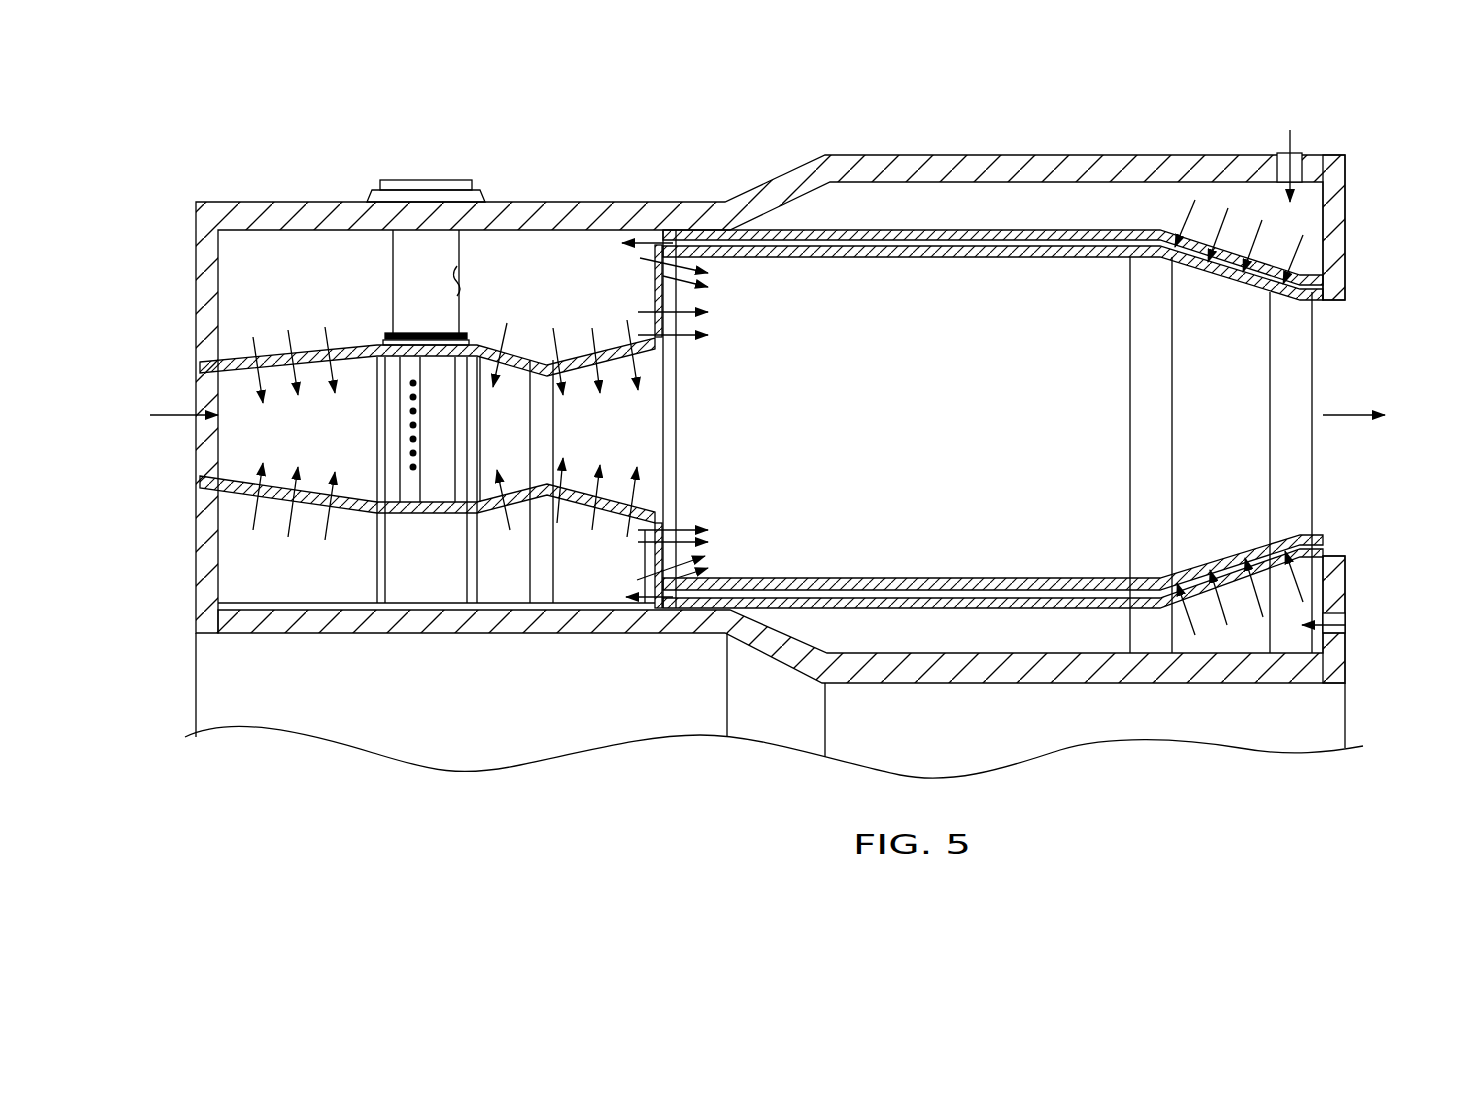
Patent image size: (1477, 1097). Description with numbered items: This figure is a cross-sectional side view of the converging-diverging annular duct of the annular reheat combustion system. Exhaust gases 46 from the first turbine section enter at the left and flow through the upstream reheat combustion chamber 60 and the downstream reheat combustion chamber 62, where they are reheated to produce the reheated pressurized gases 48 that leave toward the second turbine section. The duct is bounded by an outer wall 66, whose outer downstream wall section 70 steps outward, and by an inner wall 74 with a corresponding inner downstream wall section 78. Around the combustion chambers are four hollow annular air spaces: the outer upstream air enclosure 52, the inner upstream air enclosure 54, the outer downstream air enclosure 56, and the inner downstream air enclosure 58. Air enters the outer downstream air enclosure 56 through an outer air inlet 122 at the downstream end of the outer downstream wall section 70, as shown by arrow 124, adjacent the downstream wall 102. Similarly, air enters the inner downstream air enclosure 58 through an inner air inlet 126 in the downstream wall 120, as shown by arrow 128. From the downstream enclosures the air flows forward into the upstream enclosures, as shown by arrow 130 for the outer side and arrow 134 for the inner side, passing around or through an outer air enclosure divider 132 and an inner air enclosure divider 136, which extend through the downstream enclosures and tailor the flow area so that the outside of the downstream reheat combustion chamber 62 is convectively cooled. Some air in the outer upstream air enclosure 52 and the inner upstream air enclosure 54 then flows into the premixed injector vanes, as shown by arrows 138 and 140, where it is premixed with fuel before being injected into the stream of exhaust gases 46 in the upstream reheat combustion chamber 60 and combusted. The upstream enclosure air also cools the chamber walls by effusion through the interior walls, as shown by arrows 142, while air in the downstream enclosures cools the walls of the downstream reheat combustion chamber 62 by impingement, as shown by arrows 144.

The exhaust gases 46 is at (168, 426).
The reheated pressurized gases 48 is at (1358, 420).
The outer upstream air enclosure 52 is at (292, 285).
The inner upstream air enclosure 54 is at (284, 573).
The outer downstream air enclosure 56 is at (1099, 215).
The inner downstream air enclosure 58 is at (1081, 643).
The upstream reheat combustion chamber 60 is at (321, 445).
The downstream reheat combustion chamber 62 is at (937, 445).
The outer wall 66 is at (705, 128).
The outer downstream wall section 70 is at (848, 150).
The inner wall 74 is at (768, 770).
The inner downstream wall section 78 is at (1093, 680).
The downstream wall 102 is at (1347, 188).
The downstream wall 120 is at (1348, 581).
The outer air inlet 122 is at (1282, 152).
The arrow 124 is at (1291, 146).
The inner air inlet 126 is at (1348, 620).
The arrow 128 is at (1348, 636).
The arrow 130 is at (653, 240).
The outer air enclosure divider 132 is at (990, 230).
The arrow 134 is at (640, 600).
The inner air enclosure divider 136 is at (955, 612).
The arrow 138 is at (420, 332).
The arrow 140 is at (420, 538).
The arrows 142 is at (250, 352).
The arrows 144 is at (1300, 256).